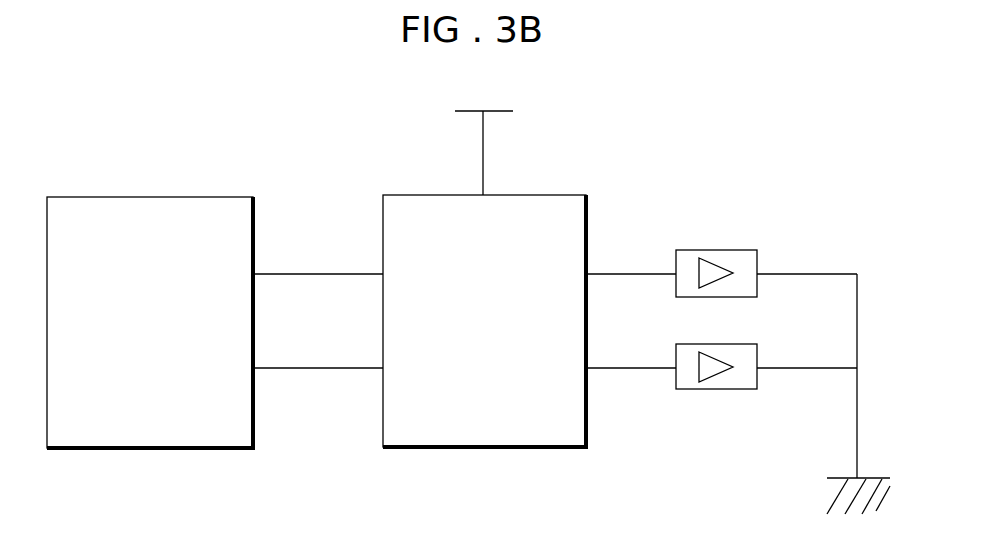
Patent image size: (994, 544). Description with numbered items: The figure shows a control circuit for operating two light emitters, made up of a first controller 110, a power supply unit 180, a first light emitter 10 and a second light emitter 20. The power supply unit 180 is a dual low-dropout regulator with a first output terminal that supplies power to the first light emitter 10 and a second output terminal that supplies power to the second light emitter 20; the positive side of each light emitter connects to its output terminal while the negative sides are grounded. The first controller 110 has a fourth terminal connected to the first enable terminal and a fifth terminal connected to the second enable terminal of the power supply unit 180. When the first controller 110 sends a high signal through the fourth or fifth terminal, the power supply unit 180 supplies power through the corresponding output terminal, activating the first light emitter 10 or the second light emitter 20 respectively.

The first controller 110 is at (190, 197).
The power supply unit 180 is at (565, 195).
The first light emitter 10 is at (730, 250).
The second light emitter 20 is at (733, 389).